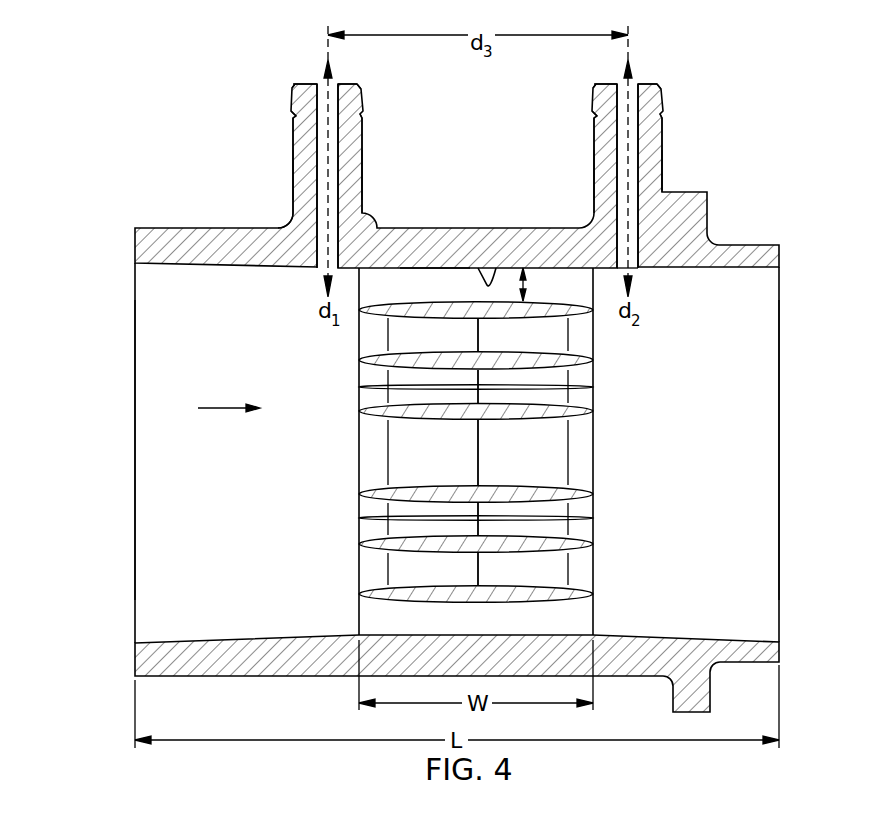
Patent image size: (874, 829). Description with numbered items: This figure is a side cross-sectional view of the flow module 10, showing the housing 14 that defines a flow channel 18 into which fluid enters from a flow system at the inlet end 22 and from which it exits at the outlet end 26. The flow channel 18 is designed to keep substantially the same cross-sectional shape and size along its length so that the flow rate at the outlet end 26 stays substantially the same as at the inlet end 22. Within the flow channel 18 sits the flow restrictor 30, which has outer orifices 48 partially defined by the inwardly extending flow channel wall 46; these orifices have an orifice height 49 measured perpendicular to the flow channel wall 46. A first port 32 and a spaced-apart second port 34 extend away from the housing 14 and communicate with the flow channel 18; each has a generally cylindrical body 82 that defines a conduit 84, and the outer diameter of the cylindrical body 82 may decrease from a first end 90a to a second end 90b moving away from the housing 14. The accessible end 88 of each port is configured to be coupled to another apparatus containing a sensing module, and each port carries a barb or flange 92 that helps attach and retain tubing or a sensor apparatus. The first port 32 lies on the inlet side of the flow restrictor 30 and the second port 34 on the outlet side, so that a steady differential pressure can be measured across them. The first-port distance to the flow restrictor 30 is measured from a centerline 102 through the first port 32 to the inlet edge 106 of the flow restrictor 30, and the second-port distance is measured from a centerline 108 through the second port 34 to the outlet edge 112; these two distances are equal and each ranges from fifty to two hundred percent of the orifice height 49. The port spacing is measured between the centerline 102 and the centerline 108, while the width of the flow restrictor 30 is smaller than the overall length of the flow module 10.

The flow module 10 is at (151, 146).
The housing 14 is at (186, 228).
The flow channel 18 is at (243, 469).
The inlet end 22 is at (120, 448).
The outlet end 26 is at (770, 453).
The flow restrictor 30 is at (506, 451).
The first port 32 is at (372, 186).
The second port 34 is at (674, 184).
The flow channel wall 46 is at (497, 283).
The outer orifices 48 is at (432, 282).
The orifice height 49 is at (528, 287).
The cylindrical body 82 is at (364, 158).
The conduit 84 is at (320, 146).
The accessible end 88 is at (304, 89).
The first end 90a is at (286, 225).
The second end 90b is at (364, 126).
The barb or flange 92 is at (363, 97).
The centerline 102 is at (330, 84).
The inlet edge 106 is at (358, 308).
The centerline 108 is at (630, 84).
The outlet edge 112 is at (636, 272).